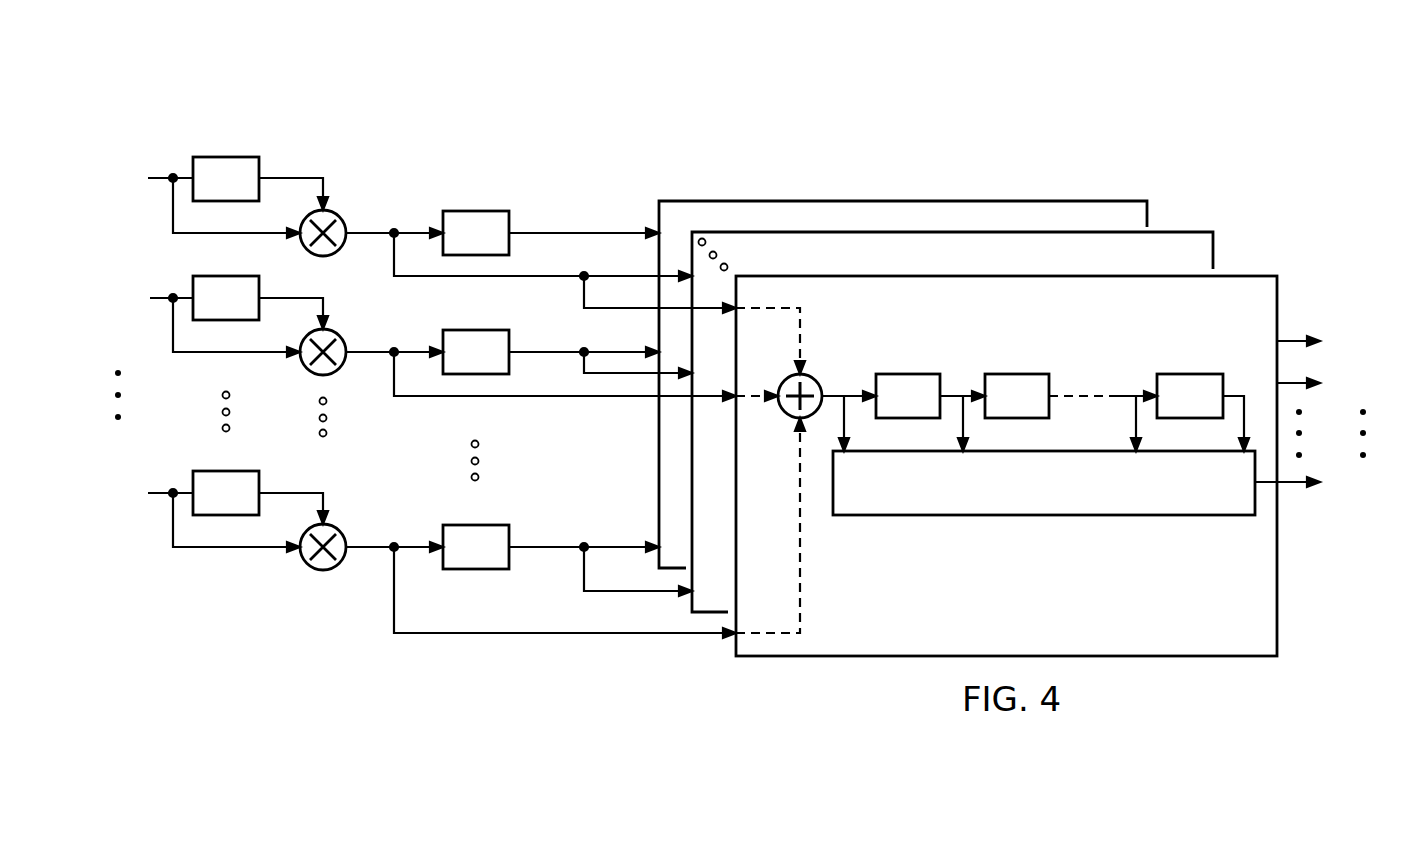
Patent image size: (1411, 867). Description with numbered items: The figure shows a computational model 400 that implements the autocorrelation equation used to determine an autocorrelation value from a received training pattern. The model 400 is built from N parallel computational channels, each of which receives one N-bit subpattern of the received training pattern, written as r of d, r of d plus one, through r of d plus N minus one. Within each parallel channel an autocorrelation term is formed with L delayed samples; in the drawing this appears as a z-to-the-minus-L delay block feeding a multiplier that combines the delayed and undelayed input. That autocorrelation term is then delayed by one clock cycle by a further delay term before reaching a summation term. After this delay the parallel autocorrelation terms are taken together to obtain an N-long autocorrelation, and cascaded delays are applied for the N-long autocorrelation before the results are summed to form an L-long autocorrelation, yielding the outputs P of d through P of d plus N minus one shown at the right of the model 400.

The computational model 400 is at (957, 96).